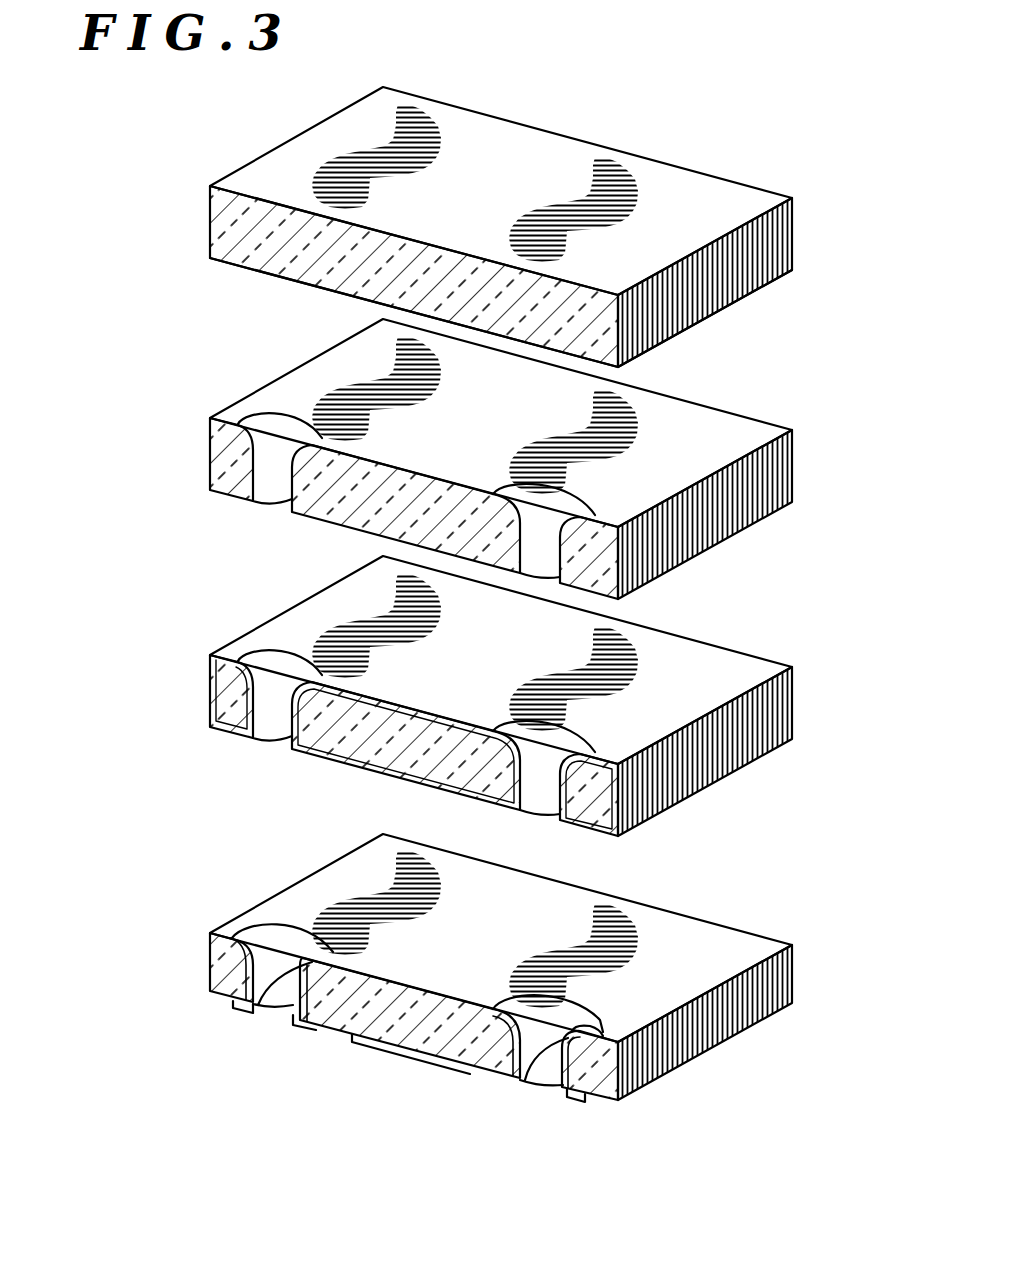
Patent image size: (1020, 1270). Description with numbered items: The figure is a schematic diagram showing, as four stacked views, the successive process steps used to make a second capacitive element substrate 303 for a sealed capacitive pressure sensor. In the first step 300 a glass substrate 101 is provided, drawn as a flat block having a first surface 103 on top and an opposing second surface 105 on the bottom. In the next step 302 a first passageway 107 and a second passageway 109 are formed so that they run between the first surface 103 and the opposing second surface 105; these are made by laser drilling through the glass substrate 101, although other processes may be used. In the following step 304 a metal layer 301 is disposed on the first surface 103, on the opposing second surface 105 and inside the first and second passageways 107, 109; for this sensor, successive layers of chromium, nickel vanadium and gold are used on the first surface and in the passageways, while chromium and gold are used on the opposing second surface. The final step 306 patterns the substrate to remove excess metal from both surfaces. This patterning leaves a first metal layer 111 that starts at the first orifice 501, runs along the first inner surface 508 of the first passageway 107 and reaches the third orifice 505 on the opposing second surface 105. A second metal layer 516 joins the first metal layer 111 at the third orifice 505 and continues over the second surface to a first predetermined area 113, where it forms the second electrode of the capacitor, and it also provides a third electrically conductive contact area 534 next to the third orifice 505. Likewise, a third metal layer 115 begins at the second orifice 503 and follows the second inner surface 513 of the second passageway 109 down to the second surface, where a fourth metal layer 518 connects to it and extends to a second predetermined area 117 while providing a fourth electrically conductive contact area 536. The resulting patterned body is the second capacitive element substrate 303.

The step of providing glass substrate 300 is at (781, 163).
The step of providing passageways 302 is at (781, 388).
The step of disposing metal layer 304 is at (781, 616).
The patterning step 306 is at (781, 861).
The glass substrate 101 is at (783, 237).
The first surface 103 is at (685, 182).
The opposing second surface 105 is at (765, 287).
The first passageway 107 is at (570, 503).
The second passageway 109 is at (270, 442).
The metal layer 301 is at (667, 638).
The second capacitive element substrate 303 is at (842, 940).
The first orifice 501 is at (515, 1000).
The second orifice 503 is at (277, 928).
The third orifice 505 is at (545, 1090).
The second inner surface 513 is at (212, 953).
The second predetermined area 117 is at (225, 990).
The fourth electrically conductive contact area 536 is at (247, 1006).
The third metal layer 115 is at (262, 1005).
The fourth metal layer 518 is at (302, 1022).
The second metal layer 516 is at (383, 1043).
The first predetermined area 113 is at (376, 1045).
The first metal layer 111 is at (523, 1085).
The third electrically conductive contact area 534 is at (567, 1103).
The first inner surface 508 is at (590, 1048).